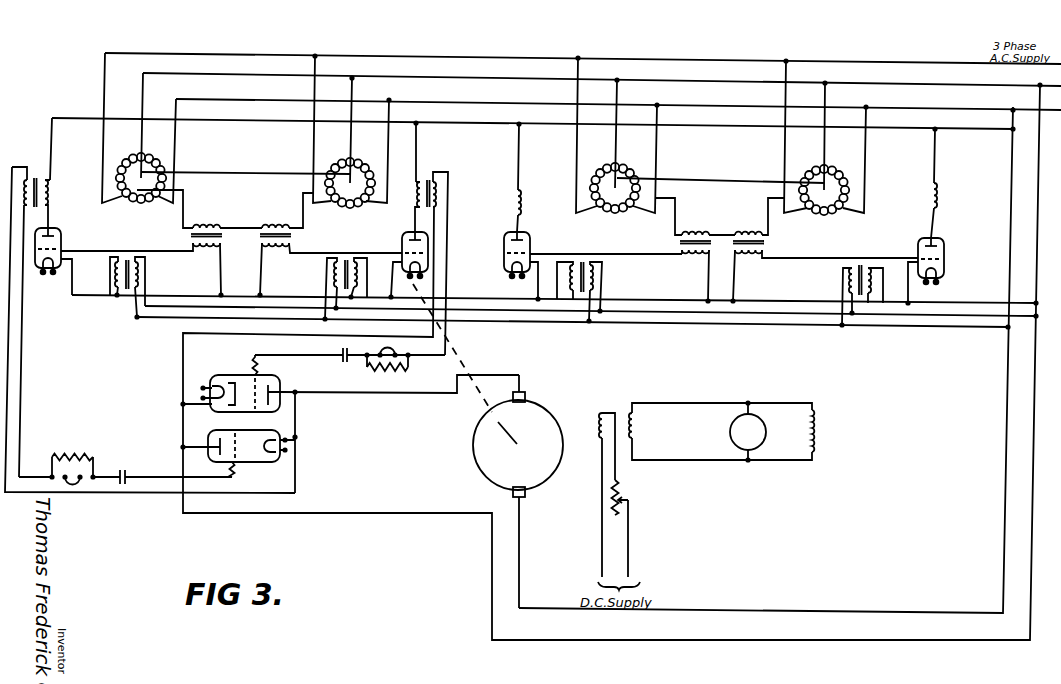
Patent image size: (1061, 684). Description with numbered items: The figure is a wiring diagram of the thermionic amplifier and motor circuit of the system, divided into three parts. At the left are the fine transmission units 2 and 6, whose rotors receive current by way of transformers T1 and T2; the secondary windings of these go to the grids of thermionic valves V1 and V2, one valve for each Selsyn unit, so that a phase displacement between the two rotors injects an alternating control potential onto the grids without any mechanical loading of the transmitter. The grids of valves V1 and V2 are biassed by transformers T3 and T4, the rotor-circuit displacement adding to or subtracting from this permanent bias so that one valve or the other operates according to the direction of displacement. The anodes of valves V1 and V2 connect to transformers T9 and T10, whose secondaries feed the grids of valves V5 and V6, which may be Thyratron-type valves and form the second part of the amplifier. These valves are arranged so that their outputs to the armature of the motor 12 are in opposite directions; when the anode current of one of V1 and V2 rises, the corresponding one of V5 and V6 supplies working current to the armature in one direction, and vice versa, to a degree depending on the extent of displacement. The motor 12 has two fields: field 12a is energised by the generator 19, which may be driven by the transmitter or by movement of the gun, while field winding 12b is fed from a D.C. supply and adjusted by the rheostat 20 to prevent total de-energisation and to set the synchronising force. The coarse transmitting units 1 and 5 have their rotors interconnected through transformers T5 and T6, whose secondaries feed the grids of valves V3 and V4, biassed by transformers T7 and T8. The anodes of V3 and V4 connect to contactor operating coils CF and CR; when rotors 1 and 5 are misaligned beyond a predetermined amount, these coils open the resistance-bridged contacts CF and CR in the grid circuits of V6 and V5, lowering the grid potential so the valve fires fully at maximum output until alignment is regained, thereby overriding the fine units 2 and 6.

The coarse transmitting unit 1 is at (636, 170).
The fine transmission unit 2 is at (152, 170).
The coarse transmitting unit 5 is at (852, 160).
The fine transmission unit 6 is at (370, 154).
The motor 12 is at (518, 491).
The field 12a is at (634, 430).
The field winding 12b is at (602, 425).
The generator 19 is at (748, 431).
The rheostat 20 is at (622, 492).
The transformer T1 is at (206, 227).
The transformer T2 is at (275, 227).
The transformer T3 is at (111, 287).
The transformer T4 is at (328, 288).
The transformer T5 is at (695, 232).
The transformer T6 is at (748, 232).
The transformer T7 is at (592, 291).
The transformer T8 is at (860, 262).
The transformer T9 is at (44, 197).
The transformer T10 is at (414, 194).
The thermionic valve V1 is at (64, 250).
The thermionic valve V2 is at (399, 255).
The valve V3 is at (500, 255).
The valve V4 is at (948, 261).
The valve V5 is at (248, 460).
The valve V6 is at (240, 380).
The contactor operating coil and contact CF is at (459, 288).
The contactor operating coil and contact CR is at (70, 498).